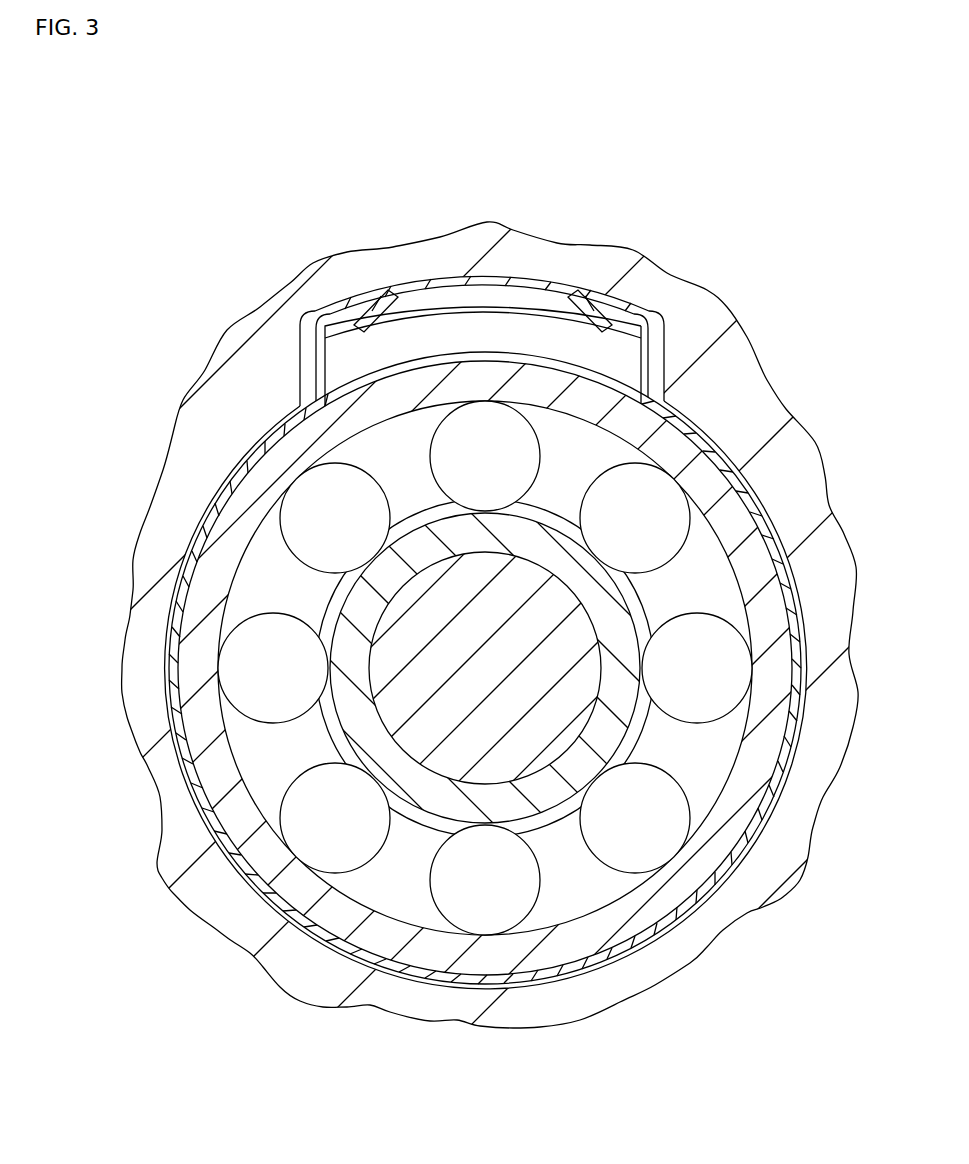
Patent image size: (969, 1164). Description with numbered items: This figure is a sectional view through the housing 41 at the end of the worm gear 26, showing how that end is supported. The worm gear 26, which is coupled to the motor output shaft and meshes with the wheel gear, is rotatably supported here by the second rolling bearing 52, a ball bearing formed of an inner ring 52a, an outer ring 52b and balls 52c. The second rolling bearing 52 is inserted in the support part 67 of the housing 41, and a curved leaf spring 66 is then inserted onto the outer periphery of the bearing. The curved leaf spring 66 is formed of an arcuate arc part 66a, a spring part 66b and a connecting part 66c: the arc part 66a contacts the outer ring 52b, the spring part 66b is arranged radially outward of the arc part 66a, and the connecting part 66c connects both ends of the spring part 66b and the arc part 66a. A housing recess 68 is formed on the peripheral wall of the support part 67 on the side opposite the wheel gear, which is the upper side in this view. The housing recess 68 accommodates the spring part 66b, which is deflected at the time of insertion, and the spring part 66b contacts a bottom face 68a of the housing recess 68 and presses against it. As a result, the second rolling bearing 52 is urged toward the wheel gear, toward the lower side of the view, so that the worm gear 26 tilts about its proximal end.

The worm gear 26 is at (552, 596).
The housing 41 is at (722, 308).
The second rolling bearing 52 is at (484, 734).
The inner ring 52a is at (430, 795).
The outer ring 52b is at (497, 955).
The balls 52c is at (468, 905).
The curved leaf spring 66 is at (485, 589).
The arc part 66a is at (240, 462).
The spring part 66b is at (352, 323).
The connecting part 66c is at (650, 363).
The support part 67 is at (757, 505).
The housing recess 68 is at (298, 392).
The bottom face 68a is at (430, 285).